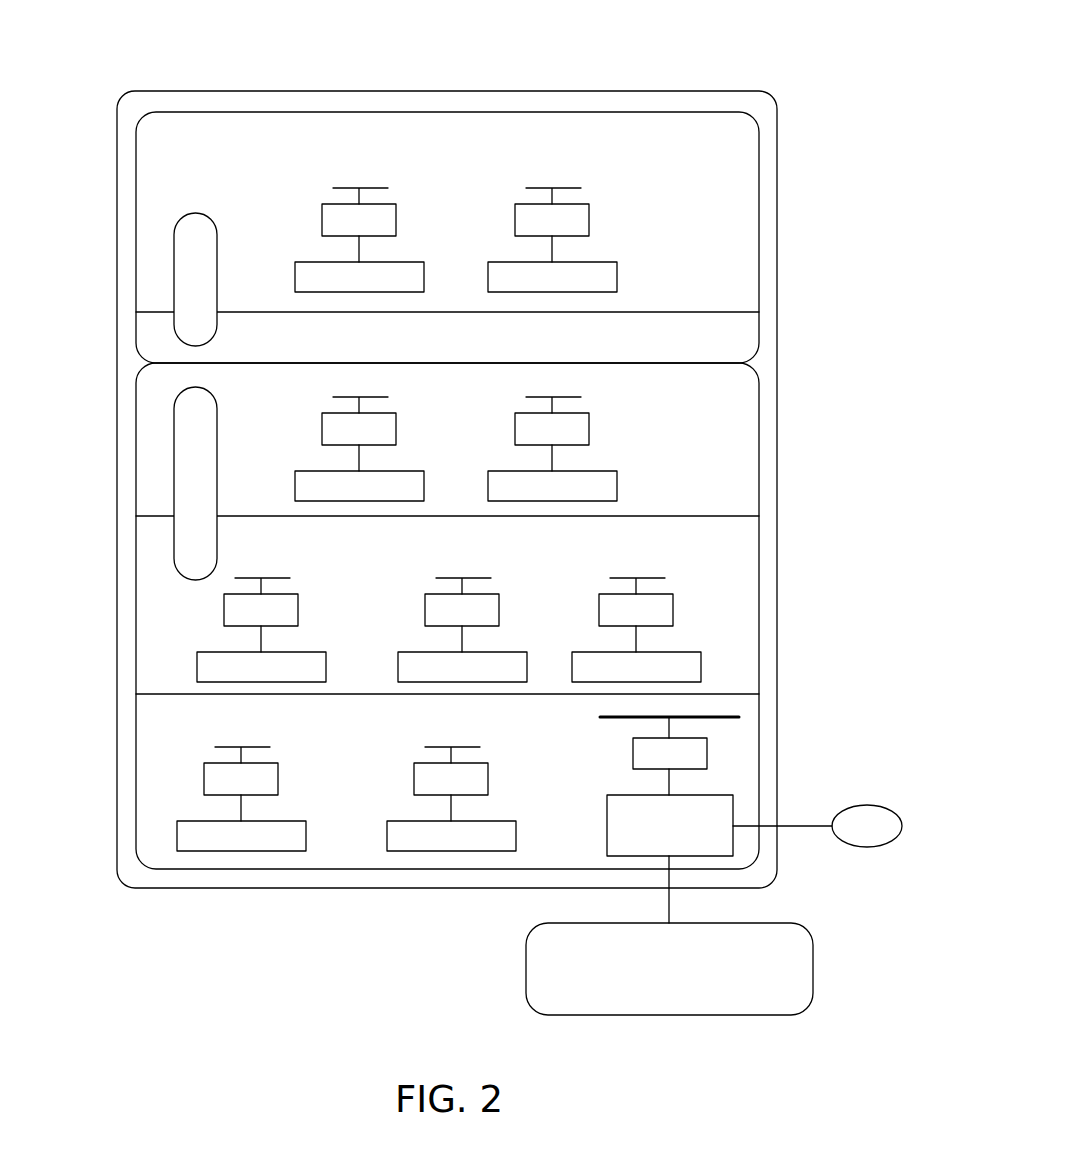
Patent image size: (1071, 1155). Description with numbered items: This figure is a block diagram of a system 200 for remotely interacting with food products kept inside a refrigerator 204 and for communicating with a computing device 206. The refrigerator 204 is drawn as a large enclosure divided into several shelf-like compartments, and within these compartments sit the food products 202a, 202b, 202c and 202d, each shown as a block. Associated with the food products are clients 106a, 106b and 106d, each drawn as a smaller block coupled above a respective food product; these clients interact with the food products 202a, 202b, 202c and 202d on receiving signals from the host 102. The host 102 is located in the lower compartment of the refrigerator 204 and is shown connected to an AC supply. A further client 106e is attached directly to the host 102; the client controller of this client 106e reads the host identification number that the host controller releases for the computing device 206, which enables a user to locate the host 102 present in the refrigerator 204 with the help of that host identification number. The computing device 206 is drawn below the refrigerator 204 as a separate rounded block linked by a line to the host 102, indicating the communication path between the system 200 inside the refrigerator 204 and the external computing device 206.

The system 200 is at (472, 545).
The refrigerator 204 is at (484, 489).
The client 106a is at (243, 181).
The client 106b is at (243, 408).
The client 106d is at (184, 765).
The client 106e is at (714, 736).
The food product 202a is at (233, 260).
The food product 202b is at (233, 489).
The food product 202c is at (194, 624).
The food product 202d is at (241, 867).
The host 102 is at (725, 806).
The computing device 206 is at (669, 1000).